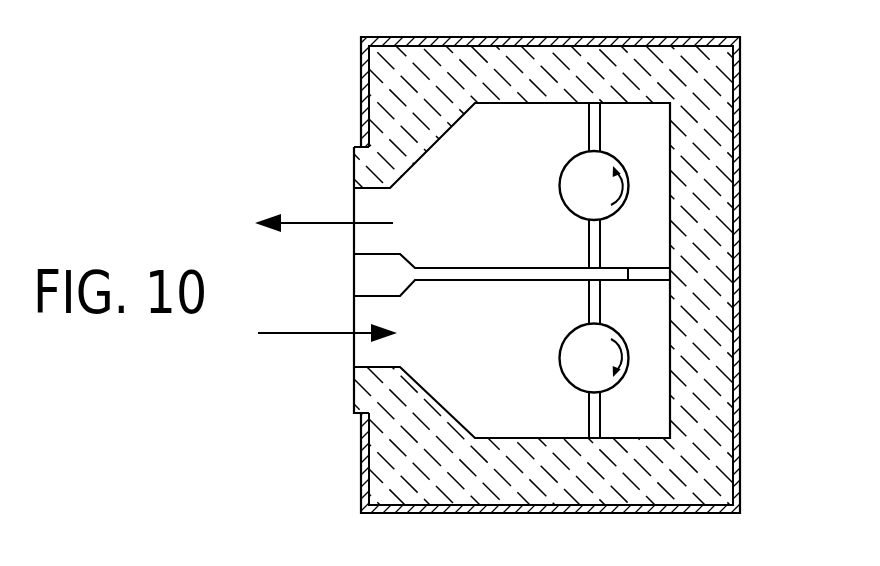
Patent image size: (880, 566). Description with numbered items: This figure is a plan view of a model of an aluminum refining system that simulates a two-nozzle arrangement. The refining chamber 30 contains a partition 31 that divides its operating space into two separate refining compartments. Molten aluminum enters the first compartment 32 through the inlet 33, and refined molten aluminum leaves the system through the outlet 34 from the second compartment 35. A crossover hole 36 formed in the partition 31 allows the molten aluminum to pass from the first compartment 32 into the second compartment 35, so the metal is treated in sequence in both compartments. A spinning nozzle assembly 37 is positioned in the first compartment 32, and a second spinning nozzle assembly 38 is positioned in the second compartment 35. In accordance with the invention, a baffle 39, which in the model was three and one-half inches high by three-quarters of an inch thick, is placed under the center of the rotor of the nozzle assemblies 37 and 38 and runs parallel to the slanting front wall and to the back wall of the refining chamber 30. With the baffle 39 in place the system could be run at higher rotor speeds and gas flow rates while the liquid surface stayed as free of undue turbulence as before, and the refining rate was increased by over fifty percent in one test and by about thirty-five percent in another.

The refining chamber 30 is at (711, 514).
The partition 31 is at (533, 283).
The first compartment 32 is at (330, 490).
The inlet 33 is at (365, 355).
The outlet 34 is at (360, 208).
The second compartment 35 is at (445, 155).
The crossover hole 36 is at (650, 277).
The spinning nozzle assembly 37 is at (572, 382).
The second spinning nozzle assembly 38 is at (615, 152).
The baffle 39 is at (603, 233).